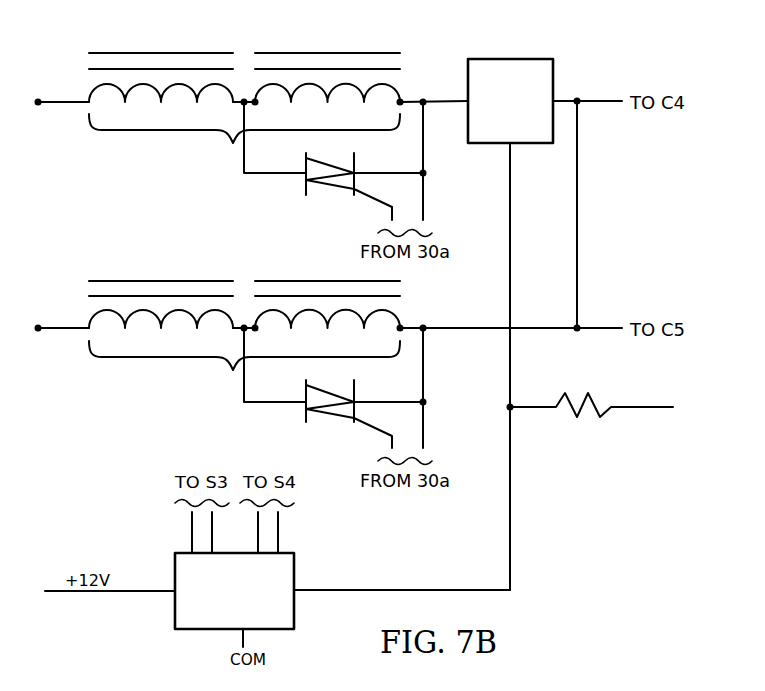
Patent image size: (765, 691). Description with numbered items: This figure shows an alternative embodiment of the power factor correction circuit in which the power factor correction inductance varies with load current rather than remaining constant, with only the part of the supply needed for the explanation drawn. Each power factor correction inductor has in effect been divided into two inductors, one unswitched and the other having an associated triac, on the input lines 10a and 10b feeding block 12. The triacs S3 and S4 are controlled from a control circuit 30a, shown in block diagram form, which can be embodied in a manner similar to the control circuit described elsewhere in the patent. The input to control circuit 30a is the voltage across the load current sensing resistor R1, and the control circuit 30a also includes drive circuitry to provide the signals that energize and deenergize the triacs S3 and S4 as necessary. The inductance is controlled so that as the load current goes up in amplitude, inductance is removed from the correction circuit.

The input conductor 10a is at (61, 93).
The input conductor 10b is at (61, 320).
The rectifier block 12 is at (502, 67).
The control circuit 30a is at (285, 578).
The triac S3 is at (349, 186).
The triac S4 is at (349, 414).
The load current sensing resistor R1 is at (591, 394).